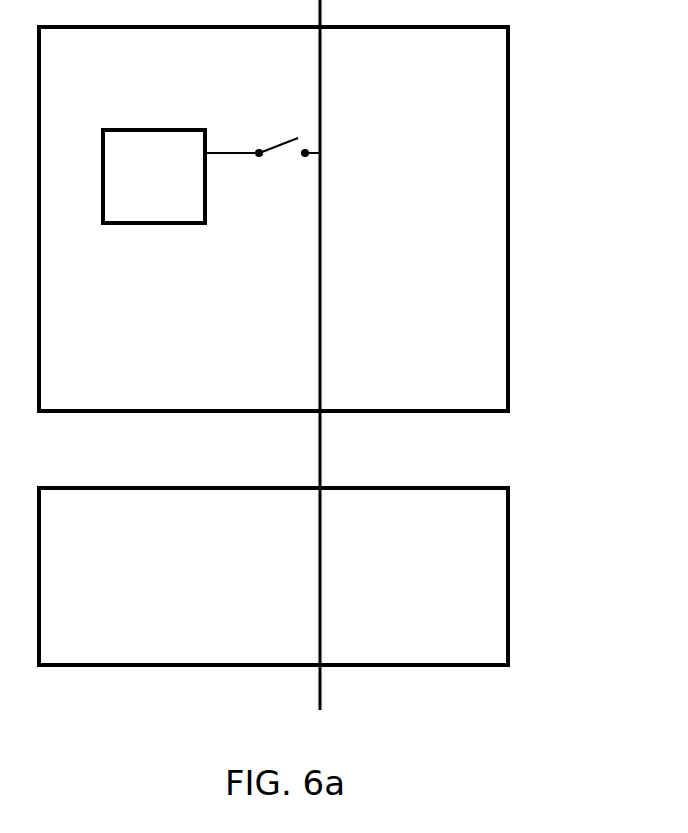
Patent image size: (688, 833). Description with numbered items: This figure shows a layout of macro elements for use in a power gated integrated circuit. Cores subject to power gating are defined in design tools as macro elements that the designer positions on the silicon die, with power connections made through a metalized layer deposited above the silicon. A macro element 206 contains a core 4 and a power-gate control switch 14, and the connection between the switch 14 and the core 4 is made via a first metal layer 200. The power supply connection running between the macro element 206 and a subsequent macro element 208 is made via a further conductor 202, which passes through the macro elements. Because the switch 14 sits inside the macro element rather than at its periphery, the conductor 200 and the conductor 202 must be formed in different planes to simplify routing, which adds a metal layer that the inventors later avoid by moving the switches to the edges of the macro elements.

The core 4 is at (153, 223).
The switch 14 is at (287, 158).
The first metal layer 200 is at (247, 133).
The further conductor 202 is at (321, 218).
The macro element 206 is at (509, 218).
The subsequent macro element 208 is at (509, 577).